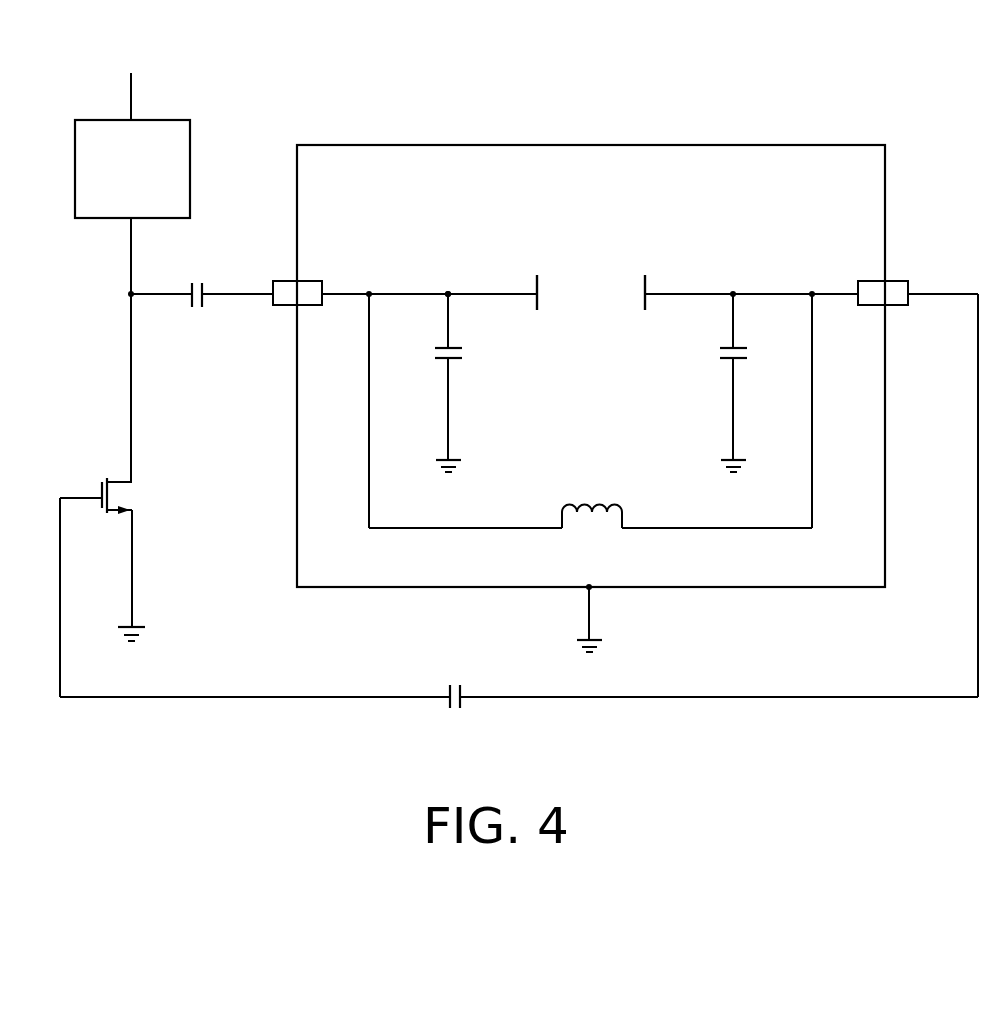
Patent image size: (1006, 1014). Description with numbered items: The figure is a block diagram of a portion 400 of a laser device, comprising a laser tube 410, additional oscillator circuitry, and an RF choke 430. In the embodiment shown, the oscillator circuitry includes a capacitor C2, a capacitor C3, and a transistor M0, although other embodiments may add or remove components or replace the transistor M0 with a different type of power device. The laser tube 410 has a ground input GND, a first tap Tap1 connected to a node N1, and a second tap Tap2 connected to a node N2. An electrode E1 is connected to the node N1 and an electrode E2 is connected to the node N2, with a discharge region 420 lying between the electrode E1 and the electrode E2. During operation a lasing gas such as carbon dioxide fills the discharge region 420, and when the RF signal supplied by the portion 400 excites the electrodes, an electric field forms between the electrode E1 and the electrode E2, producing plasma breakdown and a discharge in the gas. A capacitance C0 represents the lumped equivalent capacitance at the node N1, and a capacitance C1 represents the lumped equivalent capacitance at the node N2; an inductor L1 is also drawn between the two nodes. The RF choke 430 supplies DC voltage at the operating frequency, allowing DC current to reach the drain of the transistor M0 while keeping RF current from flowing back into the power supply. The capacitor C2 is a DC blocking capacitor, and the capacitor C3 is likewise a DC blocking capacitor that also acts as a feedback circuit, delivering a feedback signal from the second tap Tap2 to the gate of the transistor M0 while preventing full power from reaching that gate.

The portion 400 is at (487, 30).
The laser tube 410 is at (593, 145).
The discharge region 420 is at (594, 245).
The RF choke 430 is at (116, 209).
The capacitance C0 is at (434, 383).
The capacitance C1 is at (719, 383).
The capacitor C2 is at (202, 307).
The capacitor C3 is at (519, 617).
The inductor L1 is at (592, 504).
The transistor M0 is at (102, 545).
The first tap Tap1 is at (283, 280).
The second tap Tap2 is at (903, 280).
The node N1 is at (448, 292).
The node N2 is at (734, 291).
The electrode E1 is at (533, 291).
The electrode E2 is at (652, 291).
The ground input GND is at (592, 607).